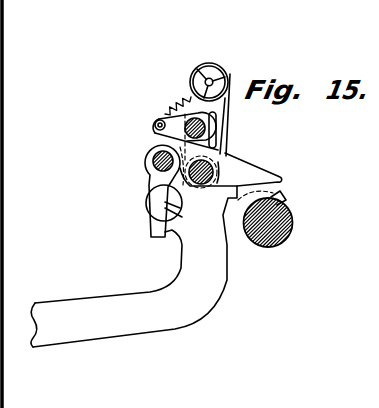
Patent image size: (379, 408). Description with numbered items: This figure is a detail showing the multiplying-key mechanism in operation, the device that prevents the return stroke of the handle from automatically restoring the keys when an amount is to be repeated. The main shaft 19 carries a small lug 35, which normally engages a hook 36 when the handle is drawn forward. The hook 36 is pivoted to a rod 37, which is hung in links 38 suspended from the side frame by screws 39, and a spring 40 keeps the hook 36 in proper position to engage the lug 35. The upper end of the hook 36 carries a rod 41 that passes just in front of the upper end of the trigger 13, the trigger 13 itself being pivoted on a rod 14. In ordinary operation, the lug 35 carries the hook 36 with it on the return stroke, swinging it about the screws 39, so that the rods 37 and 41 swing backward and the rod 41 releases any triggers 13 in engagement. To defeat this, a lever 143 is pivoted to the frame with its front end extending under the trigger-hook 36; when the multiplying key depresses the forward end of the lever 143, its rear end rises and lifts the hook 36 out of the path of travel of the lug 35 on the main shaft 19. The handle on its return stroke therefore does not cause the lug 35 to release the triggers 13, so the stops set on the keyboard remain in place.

The trigger 13 is at (152, 185).
The rod 14 is at (153, 160).
The main shaft 19 is at (272, 241).
The lug 35 is at (283, 196).
The hook 36 is at (251, 160).
The rod 37 is at (202, 180).
The links 38 is at (184, 101).
The screws 39 is at (212, 80).
The spring 40 is at (168, 112).
The rod 41 is at (200, 127).
The lever 143 is at (156, 250).